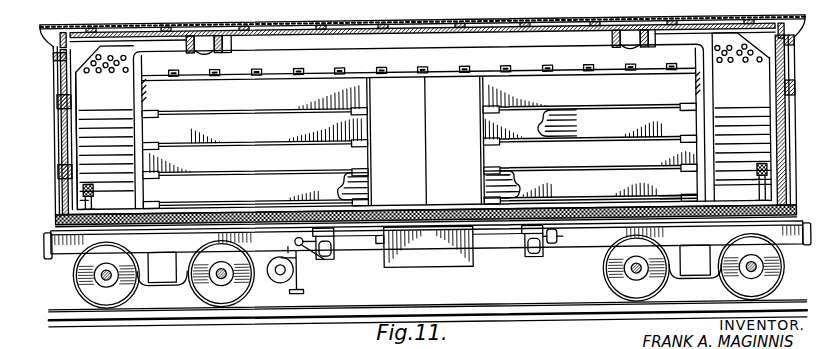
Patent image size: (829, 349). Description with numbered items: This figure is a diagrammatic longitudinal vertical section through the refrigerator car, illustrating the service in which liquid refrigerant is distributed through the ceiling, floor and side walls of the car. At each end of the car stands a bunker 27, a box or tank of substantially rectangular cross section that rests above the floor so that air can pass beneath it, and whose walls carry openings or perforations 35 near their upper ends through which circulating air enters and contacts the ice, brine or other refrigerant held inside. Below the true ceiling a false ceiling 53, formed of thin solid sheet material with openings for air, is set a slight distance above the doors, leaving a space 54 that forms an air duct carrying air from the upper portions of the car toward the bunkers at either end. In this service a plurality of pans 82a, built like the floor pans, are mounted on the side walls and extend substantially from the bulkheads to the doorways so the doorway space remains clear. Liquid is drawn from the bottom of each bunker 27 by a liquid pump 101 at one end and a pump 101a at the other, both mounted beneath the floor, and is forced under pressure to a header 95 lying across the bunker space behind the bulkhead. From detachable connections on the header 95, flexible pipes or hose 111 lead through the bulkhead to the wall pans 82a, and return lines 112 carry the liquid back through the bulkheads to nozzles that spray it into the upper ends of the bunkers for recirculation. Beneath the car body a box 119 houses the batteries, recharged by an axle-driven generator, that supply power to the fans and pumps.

The bunker 27 is at (88, 91).
The openings or perforations 35 is at (113, 67).
The false ceiling 53 is at (405, 74).
The space 54 is at (470, 61).
The pans 82a is at (273, 123).
The header 95 is at (134, 207).
The liquid pump 101 is at (536, 259).
The pump 101a is at (324, 259).
The flexible pipes or hose 111 is at (697, 192).
The return lines 112 is at (690, 176).
The box 119 is at (432, 255).